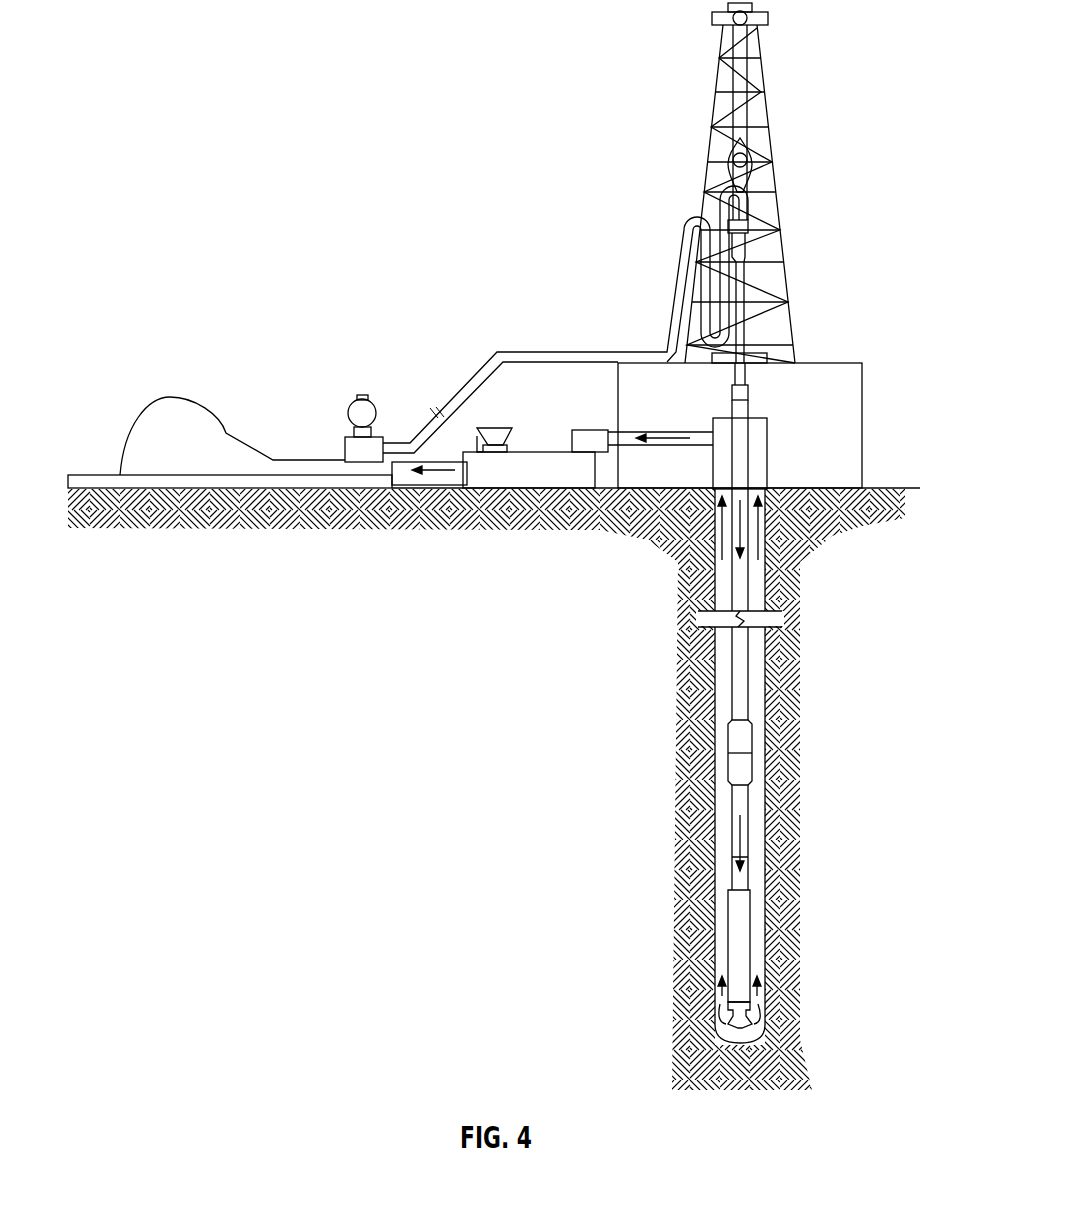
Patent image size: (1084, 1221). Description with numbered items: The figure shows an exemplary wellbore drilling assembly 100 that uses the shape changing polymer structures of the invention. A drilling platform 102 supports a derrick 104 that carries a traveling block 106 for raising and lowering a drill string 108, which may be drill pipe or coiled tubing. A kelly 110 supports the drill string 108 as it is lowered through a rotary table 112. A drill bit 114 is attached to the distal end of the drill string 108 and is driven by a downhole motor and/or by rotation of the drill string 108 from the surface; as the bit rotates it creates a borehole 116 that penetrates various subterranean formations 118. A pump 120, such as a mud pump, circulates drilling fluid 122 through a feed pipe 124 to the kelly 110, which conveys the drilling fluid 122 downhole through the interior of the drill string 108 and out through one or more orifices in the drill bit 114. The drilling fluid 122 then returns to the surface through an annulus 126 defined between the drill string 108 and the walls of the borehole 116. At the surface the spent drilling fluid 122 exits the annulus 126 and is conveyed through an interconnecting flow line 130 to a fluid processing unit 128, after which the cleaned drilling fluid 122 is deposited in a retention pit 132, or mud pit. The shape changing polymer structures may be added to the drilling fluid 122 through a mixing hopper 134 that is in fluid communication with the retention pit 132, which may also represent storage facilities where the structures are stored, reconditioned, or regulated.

The drilling assembly 100 is at (279, 173).
The drilling platform 102 is at (863, 396).
The derrick 104 is at (770, 105).
The traveling block 106 is at (758, 152).
The drill string 108 is at (745, 566).
The kelly 110 is at (745, 272).
The rotary table 112 is at (770, 359).
The drill bit 114 is at (772, 1027).
The borehole 116 is at (766, 663).
The subterranean formations 118 is at (592, 690).
The pump 120 is at (170, 396).
The drilling fluid 122 is at (415, 443).
The feed pipe 124 is at (512, 351).
The annulus 126 is at (757, 802).
The fluid processing unit 128 is at (597, 430).
The interconnecting flow line 130 is at (698, 446).
The retention pit 132 is at (556, 490).
The mixing hopper 134 is at (491, 428).